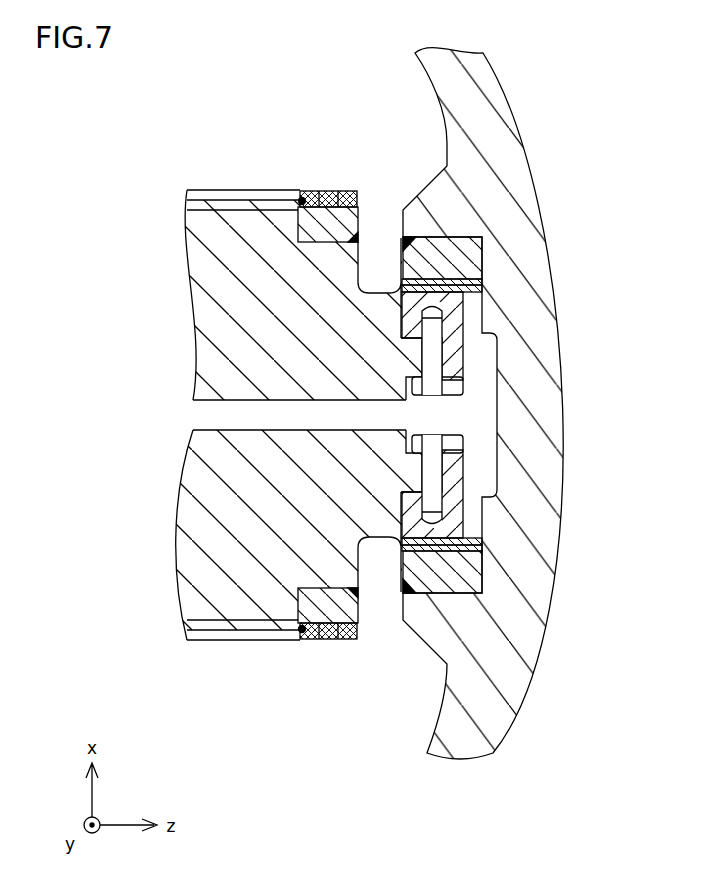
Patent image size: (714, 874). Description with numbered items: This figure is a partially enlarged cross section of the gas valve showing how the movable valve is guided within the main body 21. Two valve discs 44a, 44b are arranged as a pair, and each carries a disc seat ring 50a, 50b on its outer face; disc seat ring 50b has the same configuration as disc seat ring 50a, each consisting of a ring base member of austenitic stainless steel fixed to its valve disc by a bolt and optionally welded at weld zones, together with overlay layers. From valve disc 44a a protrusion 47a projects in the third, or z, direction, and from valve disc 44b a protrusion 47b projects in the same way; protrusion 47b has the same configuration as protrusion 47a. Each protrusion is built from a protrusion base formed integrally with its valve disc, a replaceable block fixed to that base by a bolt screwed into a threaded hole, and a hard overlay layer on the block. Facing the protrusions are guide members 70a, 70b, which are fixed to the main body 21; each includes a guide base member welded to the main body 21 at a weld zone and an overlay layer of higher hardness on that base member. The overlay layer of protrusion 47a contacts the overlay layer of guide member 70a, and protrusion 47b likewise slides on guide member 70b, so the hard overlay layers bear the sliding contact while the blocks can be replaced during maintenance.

The main body 21 is at (486, 88).
The valve disc 44a is at (202, 611).
The valve disc 44b is at (202, 221).
The protrusion 47a is at (536, 490).
The protrusion 47b is at (536, 340).
The disc seat ring 50a is at (334, 691).
The disc seat ring 50b is at (334, 141).
The guide member 70a is at (536, 565).
The guide member 70b is at (536, 267).